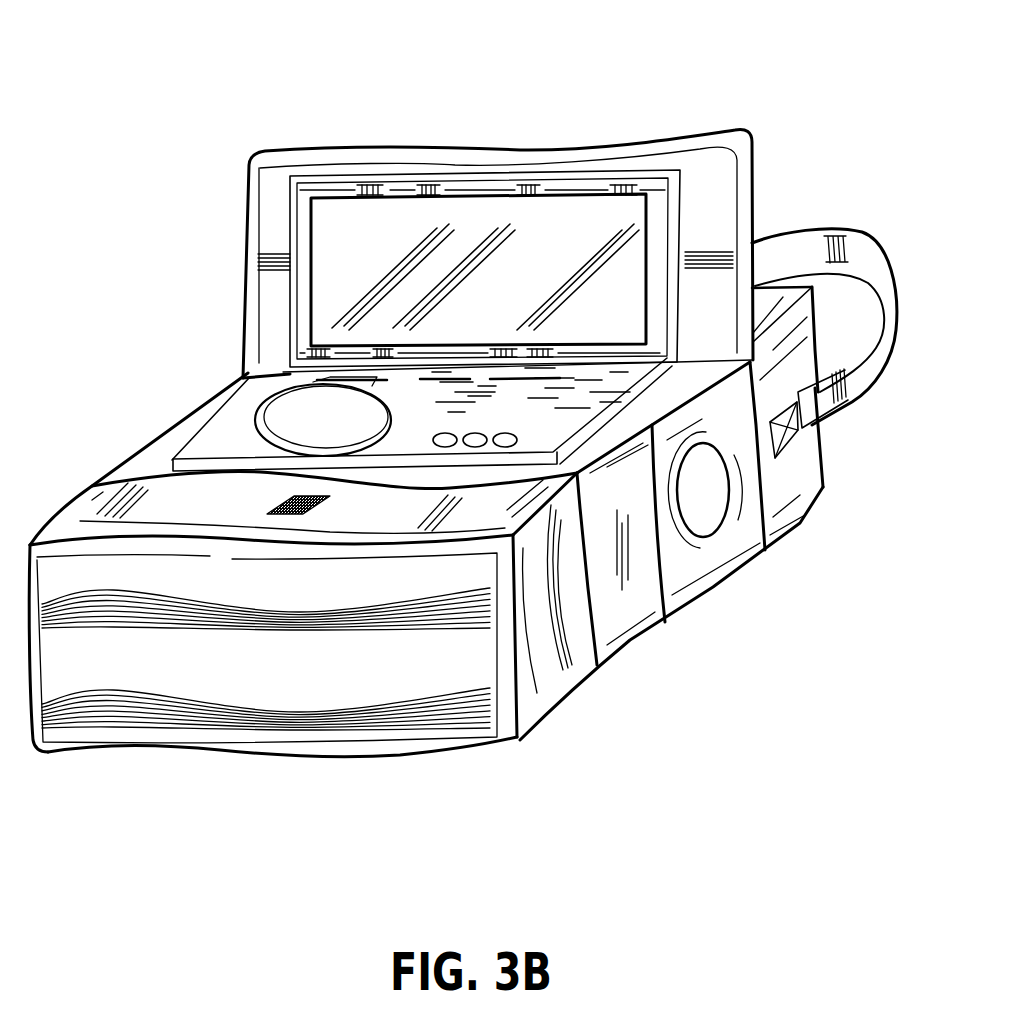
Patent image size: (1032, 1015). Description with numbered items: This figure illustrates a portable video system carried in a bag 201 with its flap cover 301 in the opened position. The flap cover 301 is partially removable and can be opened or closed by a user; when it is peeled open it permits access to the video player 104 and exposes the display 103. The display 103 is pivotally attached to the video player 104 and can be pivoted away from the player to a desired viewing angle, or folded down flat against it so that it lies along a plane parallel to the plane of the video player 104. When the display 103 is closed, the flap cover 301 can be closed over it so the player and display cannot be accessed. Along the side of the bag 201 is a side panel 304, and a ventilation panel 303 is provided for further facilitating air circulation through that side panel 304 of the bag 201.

The flap cover 301 is at (257, 173).
The pivotable display 103 is at (680, 178).
The video player 104 is at (220, 440).
The bag 201 is at (803, 523).
The ventilation panel 303 is at (705, 540).
The side panel 304 is at (673, 593).